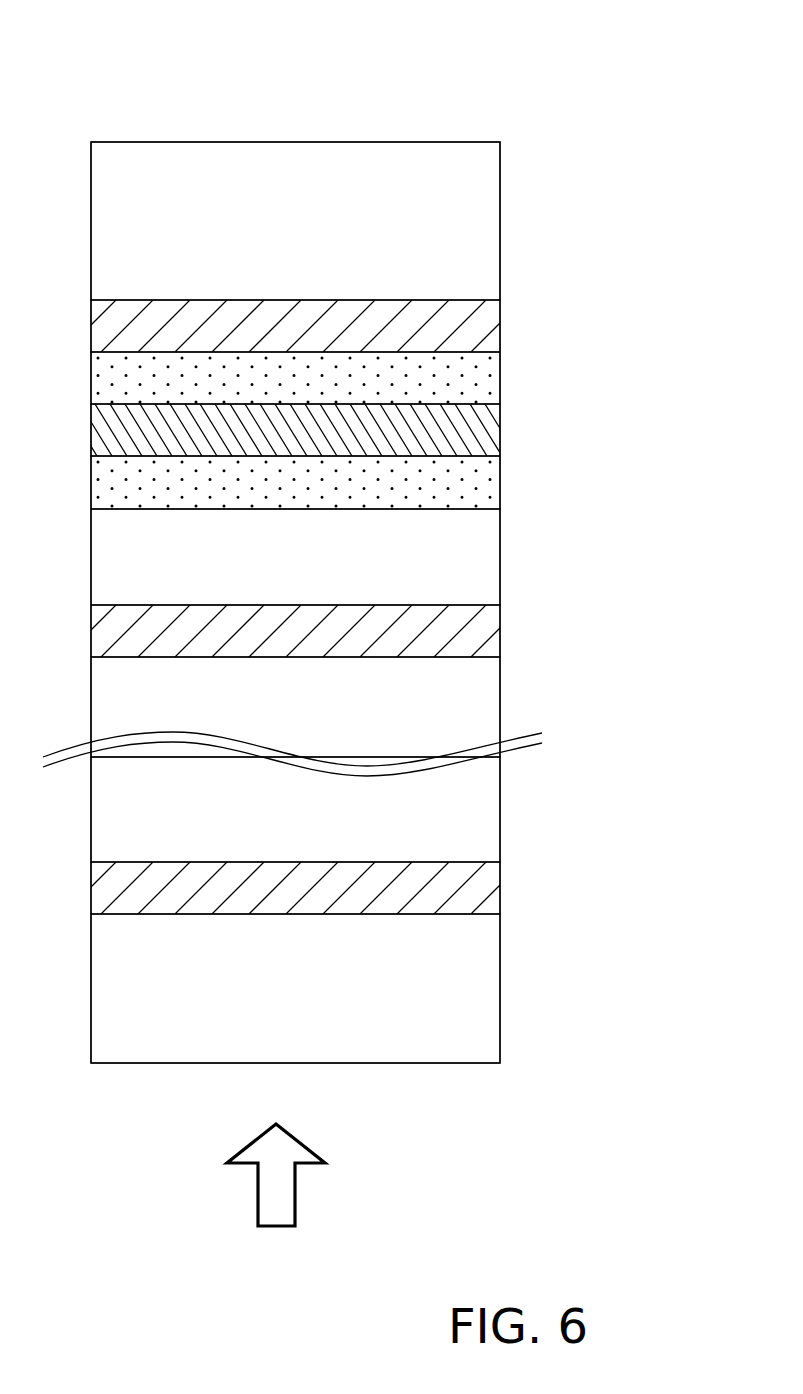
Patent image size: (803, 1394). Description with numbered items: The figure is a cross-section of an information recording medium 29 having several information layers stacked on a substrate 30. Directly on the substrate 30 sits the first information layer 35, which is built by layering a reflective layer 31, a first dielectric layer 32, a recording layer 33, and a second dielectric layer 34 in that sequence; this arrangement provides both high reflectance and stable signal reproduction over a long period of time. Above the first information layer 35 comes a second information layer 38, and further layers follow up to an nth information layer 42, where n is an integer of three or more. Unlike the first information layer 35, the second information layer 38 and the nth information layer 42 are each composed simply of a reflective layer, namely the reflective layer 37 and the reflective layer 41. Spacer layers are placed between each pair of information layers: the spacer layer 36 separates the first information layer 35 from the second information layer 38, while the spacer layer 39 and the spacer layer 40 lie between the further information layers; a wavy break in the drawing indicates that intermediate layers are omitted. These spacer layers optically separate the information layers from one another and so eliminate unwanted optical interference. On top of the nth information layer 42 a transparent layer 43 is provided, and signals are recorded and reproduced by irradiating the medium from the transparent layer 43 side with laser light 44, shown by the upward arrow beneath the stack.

The information recording medium 29 is at (432, 104).
The substrate 30 is at (457, 224).
The reflective layer 31 is at (477, 322).
The first dielectric layer 32 is at (478, 372).
The recording layer 33 is at (480, 425).
The second dielectric layer 34 is at (352, 467).
The first information layer 35 is at (388, 388).
The spacer layer 36 is at (475, 550).
The reflective layer 37 is at (475, 635).
The second information layer 38 is at (368, 620).
The spacer layer 39 is at (475, 710).
The spacer layer 40 is at (474, 816).
The reflective layer 41 is at (475, 885).
The nth information layer 42 is at (365, 873).
The transparent layer 43 is at (473, 984).
The laser light 44 is at (296, 1196).